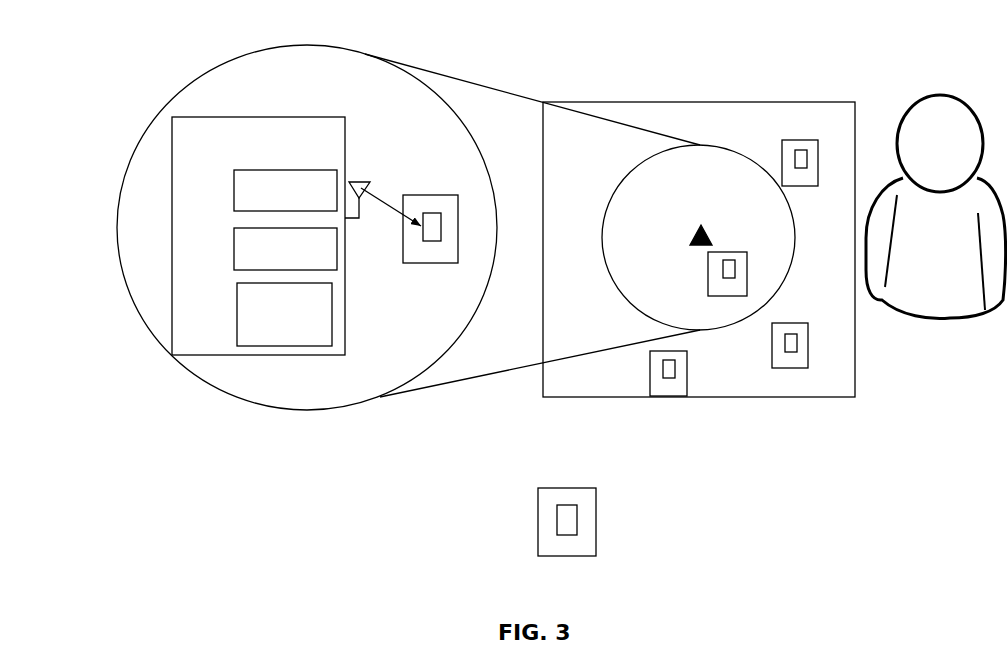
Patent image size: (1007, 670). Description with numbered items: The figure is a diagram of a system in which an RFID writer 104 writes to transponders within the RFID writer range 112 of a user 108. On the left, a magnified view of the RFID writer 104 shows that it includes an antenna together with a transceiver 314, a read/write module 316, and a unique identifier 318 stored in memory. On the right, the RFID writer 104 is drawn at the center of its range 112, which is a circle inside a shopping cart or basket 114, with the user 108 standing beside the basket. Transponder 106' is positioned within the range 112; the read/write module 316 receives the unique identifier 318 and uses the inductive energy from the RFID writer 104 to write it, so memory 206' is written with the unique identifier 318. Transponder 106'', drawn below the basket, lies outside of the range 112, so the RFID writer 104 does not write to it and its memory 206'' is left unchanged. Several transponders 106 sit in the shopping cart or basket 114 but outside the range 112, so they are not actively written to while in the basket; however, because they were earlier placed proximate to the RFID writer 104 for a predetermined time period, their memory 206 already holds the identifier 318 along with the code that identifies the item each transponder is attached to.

The RFID writer 104 is at (463, 221).
The transponders 106 is at (753, 252).
The transponder 106' is at (601, 233).
The transponder 106'' is at (588, 509).
The user 108 is at (936, 223).
The RFID writer range 112 is at (456, 217).
The shopping cart or basket 114 is at (699, 267).
The memory 206 is at (736, 272).
The memory 206' is at (552, 256).
The memory 206'' is at (591, 527).
The transceiver 314 is at (258, 188).
The read/write module 316 is at (258, 246).
The unique identifier 318 is at (256, 312).